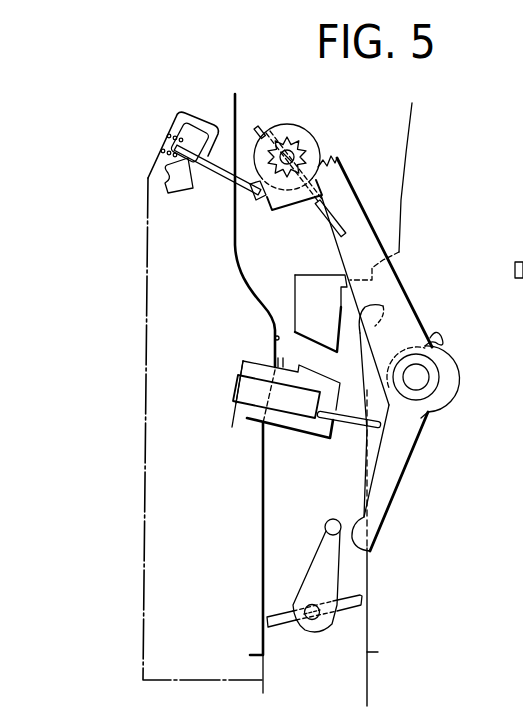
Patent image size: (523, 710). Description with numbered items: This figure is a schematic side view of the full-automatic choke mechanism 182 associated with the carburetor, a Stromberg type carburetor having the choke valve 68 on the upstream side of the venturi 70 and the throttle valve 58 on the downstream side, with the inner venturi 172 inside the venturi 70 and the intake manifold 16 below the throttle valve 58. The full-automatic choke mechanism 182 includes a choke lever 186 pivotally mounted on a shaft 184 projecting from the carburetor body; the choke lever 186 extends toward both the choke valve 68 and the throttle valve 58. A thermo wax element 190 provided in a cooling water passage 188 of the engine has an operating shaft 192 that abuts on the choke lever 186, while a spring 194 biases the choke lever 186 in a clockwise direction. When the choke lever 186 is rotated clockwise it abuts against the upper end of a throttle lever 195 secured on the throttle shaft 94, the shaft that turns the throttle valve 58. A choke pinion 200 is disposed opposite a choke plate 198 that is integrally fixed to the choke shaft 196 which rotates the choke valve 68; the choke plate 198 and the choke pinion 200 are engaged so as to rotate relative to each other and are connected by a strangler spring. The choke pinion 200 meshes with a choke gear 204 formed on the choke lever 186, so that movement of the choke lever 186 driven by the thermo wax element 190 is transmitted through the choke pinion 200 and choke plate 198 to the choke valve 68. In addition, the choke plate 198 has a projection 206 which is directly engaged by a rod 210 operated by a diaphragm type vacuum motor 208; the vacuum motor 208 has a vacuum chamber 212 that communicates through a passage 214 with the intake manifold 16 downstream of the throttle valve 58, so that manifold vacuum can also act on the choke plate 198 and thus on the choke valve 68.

The intake manifold 16 is at (368, 676).
The throttle valve 58 is at (352, 606).
The choke valve 68 is at (262, 128).
The venturi 70 is at (275, 338).
The throttle shaft 94 is at (312, 619).
The inner venturi 172 is at (295, 280).
The full-automatic choke mechanism 182 is at (408, 245).
The shaft 184 is at (418, 377).
The choke lever 186 is at (420, 440).
The cooling water passage 188 is at (242, 366).
The thermo wax element 190 is at (240, 386).
The operating shaft 192 is at (343, 424).
The spring 194 is at (450, 393).
The throttle lever 195 is at (352, 562).
The choke shaft 196 is at (296, 140).
The choke plate 198 is at (299, 140).
The choke pinion 200 is at (296, 132).
The choke gear 204 is at (337, 158).
The projection 206 is at (240, 200).
The diaphragm type vacuum motor 208 is at (201, 112).
The rod 210 is at (202, 183).
The vacuum chamber 212 is at (182, 122).
The passage 214 is at (146, 348).